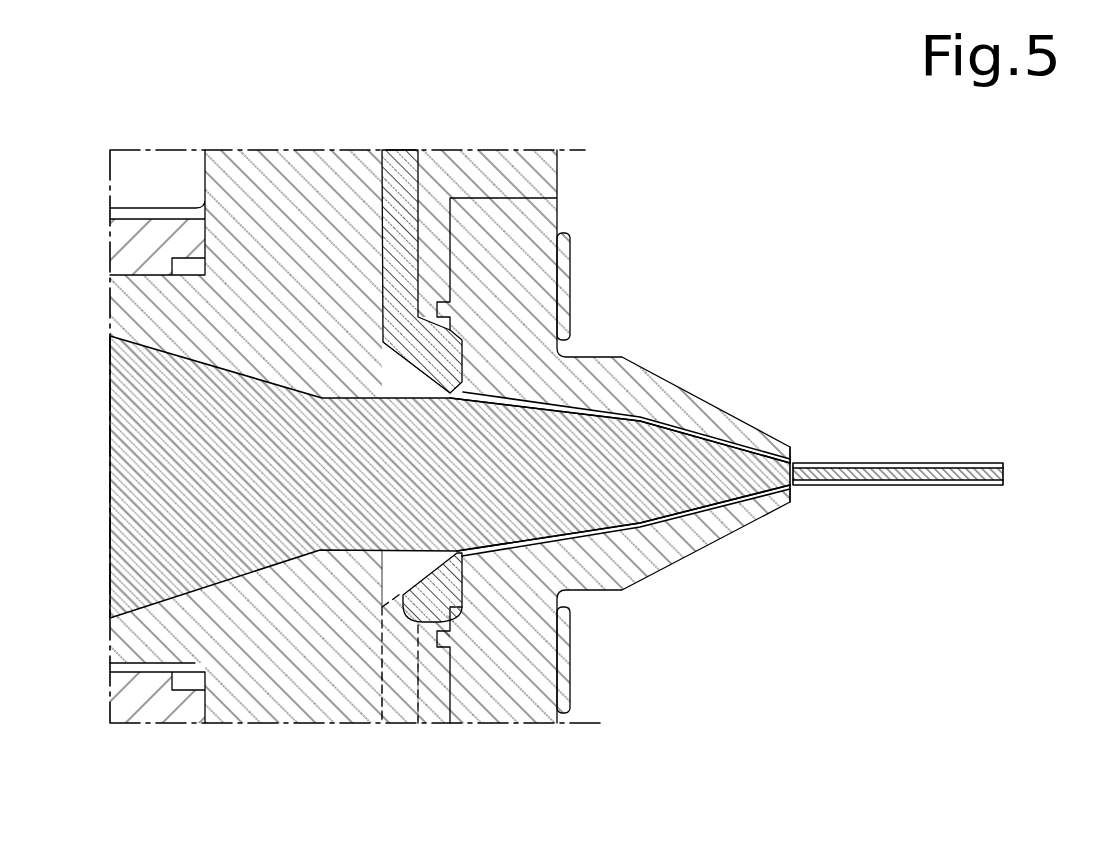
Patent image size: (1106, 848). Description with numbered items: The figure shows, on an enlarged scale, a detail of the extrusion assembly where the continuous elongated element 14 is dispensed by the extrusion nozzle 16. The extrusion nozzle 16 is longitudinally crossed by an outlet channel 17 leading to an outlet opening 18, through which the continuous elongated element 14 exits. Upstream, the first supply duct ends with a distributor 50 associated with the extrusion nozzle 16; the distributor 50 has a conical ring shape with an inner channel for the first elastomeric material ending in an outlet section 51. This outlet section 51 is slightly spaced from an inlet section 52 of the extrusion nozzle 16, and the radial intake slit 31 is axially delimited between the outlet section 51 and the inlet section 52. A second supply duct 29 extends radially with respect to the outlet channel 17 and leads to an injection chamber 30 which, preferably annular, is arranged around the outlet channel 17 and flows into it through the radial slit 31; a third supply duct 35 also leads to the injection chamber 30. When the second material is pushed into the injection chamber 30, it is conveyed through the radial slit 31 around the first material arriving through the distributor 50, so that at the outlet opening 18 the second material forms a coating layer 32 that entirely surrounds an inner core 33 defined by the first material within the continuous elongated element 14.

The continuous elongated element 14 is at (898, 455).
The extrusion nozzle 16 is at (695, 401).
The outlet channel 17 is at (588, 533).
The outlet opening 18 is at (793, 463).
The second supply duct 29 is at (417, 173).
The injection chamber 30 is at (430, 607).
The radial intake slit 31 is at (460, 577).
The coating layer 32 is at (907, 463).
The inner core 33 is at (930, 483).
The third supply duct 35 is at (403, 677).
The distributor 50 is at (410, 385).
The outlet section 51 is at (455, 393).
The inlet section 52 is at (458, 556).